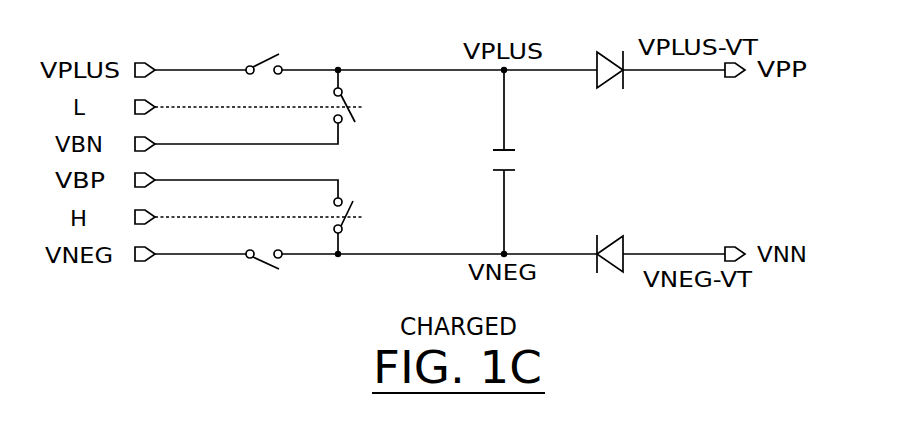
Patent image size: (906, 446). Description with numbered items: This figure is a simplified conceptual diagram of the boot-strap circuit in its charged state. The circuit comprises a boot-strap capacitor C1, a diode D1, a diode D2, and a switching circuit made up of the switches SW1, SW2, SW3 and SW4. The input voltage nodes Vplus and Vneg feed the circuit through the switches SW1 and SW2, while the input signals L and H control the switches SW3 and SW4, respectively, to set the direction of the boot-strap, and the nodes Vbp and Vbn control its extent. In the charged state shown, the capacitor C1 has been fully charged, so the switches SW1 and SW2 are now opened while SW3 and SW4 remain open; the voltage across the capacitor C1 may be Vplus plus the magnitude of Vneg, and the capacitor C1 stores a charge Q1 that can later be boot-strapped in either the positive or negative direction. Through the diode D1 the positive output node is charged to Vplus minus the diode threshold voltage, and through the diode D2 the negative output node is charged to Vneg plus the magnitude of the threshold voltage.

The switch SW1 is at (268, 50).
The switch SW2 is at (269, 275).
The switch SW3 is at (367, 107).
The switch SW4 is at (367, 226).
The boot-strap capacitor C1 is at (528, 202).
The charge Q1 is at (519, 110).
The diode D1 is at (609, 55).
The diode D2 is at (609, 239).